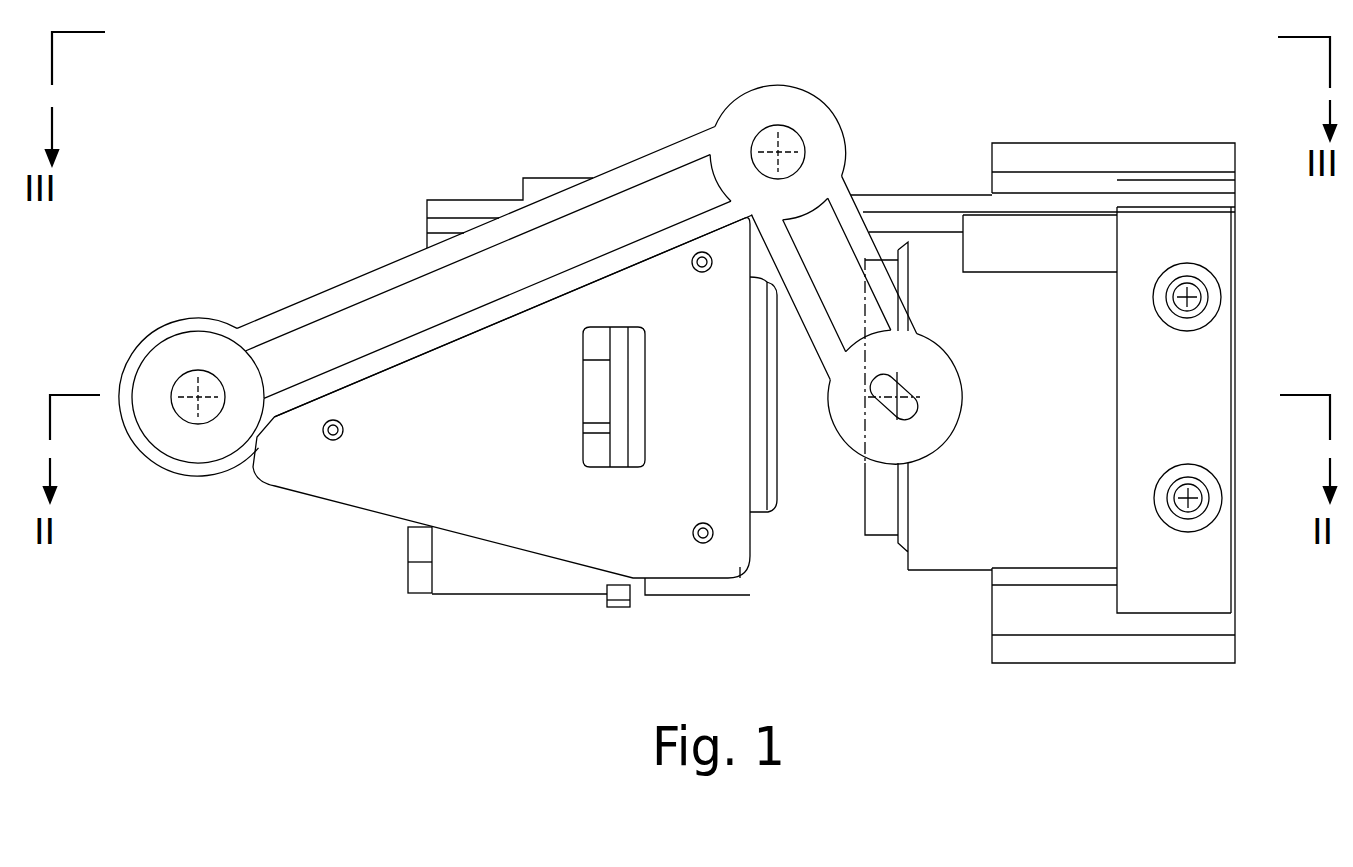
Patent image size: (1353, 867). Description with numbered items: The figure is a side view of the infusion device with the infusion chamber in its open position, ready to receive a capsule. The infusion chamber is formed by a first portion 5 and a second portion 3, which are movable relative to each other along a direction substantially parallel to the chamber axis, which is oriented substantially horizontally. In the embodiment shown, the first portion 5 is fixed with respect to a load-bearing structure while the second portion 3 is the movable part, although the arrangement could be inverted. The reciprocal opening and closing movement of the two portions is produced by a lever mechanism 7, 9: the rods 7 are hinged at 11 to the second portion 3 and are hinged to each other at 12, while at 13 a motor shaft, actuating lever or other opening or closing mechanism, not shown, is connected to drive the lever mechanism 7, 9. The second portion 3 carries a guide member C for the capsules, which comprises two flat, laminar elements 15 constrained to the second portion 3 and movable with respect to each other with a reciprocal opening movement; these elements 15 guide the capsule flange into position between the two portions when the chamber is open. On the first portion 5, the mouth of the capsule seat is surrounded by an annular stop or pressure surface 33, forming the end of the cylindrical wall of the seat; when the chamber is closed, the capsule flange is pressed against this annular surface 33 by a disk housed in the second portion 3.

The second portion of the infusion chamber 3 is at (562, 172).
The first portion of the infusion chamber 5 is at (1093, 140).
The rods of the lever mechanism 7 is at (368, 292).
The lever mechanism 9 is at (860, 238).
The hinge 11 is at (196, 392).
The hinge 12 is at (785, 150).
The connection point 13 is at (905, 390).
The elements of the guide member 15 is at (375, 480).
The annular stop or pressure surface 33 is at (897, 548).
The guide member for the capsules C is at (755, 476).